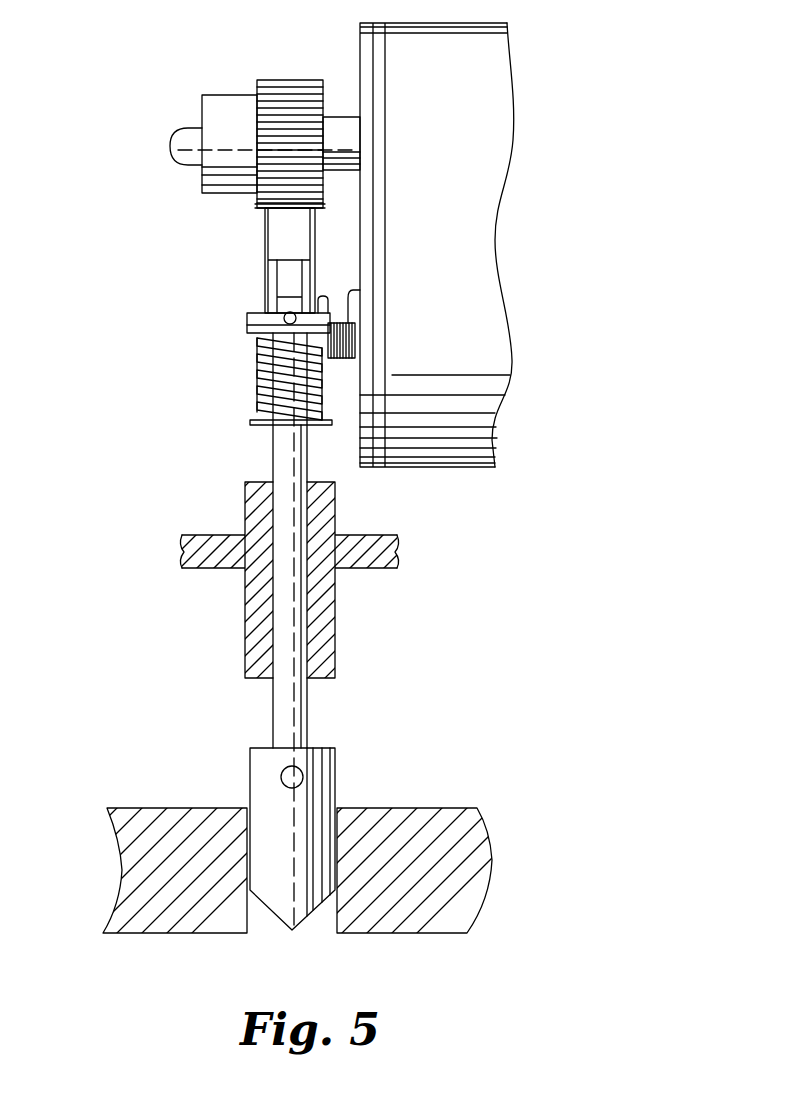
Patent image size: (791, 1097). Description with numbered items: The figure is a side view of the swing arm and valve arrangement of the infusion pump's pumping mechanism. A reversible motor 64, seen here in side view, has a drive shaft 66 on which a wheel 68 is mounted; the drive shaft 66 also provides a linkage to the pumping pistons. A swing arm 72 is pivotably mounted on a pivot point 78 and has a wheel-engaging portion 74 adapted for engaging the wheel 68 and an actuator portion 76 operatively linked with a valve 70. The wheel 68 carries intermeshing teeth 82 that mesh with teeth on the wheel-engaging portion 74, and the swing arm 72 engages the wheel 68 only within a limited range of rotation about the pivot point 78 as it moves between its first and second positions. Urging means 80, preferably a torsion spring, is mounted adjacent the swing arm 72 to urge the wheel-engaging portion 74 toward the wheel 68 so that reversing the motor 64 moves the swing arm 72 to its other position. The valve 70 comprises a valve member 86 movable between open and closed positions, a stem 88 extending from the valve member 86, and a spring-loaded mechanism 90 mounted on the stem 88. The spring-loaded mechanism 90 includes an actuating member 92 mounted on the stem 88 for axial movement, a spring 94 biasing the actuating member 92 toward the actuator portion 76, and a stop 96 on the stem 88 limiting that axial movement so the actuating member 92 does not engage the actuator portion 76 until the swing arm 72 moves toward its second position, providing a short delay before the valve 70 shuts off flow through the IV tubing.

The reversible motor 64 is at (492, 102).
The drive shaft 66 is at (342, 130).
The wheel 68 is at (222, 95).
The valve 70 is at (338, 753).
The swing arm 72 is at (263, 247).
The wheel-engaging portion 74 is at (263, 222).
The actuator portion 76 is at (277, 280).
The pivot point 78 is at (355, 333).
The urging means 80 is at (343, 360).
The intermeshing teeth 82 is at (283, 95).
The valve member 86 is at (250, 767).
The stem 88 is at (273, 710).
The spring-loaded mechanism 90 is at (253, 409).
The actuating member 92 is at (247, 318).
The spring 94 is at (260, 385).
The stop 96 is at (280, 305).